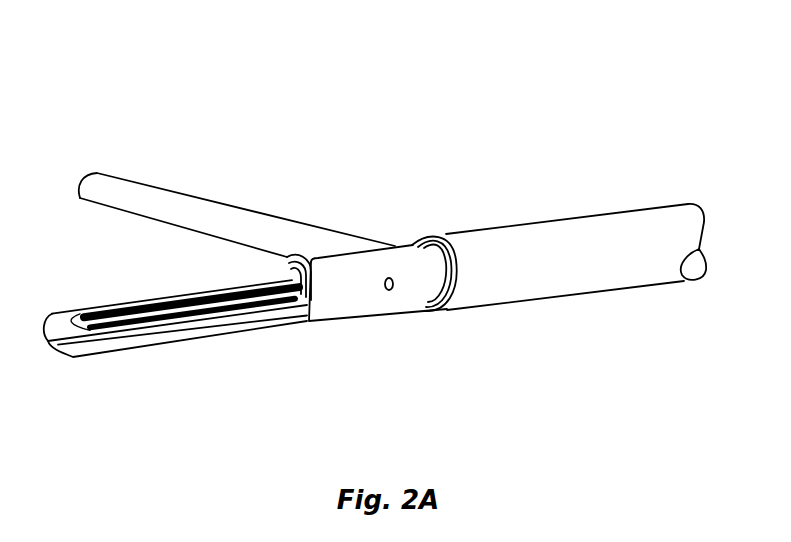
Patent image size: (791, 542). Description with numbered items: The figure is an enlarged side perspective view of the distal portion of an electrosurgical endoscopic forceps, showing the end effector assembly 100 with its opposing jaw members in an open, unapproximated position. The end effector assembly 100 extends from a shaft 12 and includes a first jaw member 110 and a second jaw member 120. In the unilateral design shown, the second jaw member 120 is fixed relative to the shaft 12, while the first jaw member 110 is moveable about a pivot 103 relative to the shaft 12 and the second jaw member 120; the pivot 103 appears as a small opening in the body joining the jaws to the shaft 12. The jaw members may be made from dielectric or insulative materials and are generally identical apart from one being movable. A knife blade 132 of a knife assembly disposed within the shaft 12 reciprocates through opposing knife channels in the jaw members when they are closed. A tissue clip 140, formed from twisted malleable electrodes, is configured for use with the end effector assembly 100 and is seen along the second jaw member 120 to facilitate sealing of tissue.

The end effector assembly 100 is at (262, 112).
The shaft 12 is at (535, 222).
The pivot 103 is at (389, 278).
The first jaw member 110 is at (104, 183).
The second jaw member 120 is at (73, 358).
The knife blade 132 is at (289, 258).
The tissue clip 140 is at (96, 308).